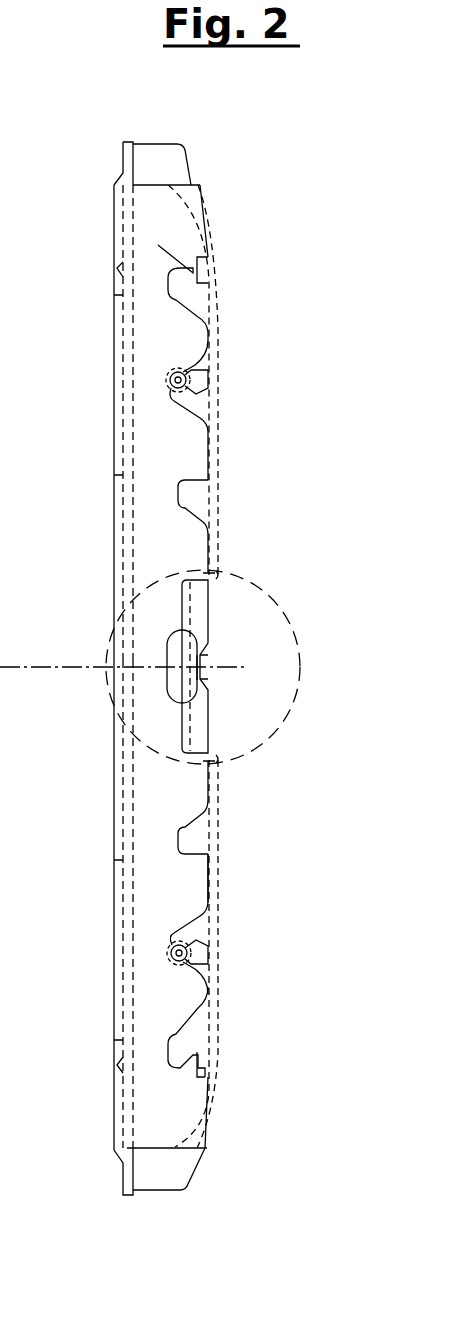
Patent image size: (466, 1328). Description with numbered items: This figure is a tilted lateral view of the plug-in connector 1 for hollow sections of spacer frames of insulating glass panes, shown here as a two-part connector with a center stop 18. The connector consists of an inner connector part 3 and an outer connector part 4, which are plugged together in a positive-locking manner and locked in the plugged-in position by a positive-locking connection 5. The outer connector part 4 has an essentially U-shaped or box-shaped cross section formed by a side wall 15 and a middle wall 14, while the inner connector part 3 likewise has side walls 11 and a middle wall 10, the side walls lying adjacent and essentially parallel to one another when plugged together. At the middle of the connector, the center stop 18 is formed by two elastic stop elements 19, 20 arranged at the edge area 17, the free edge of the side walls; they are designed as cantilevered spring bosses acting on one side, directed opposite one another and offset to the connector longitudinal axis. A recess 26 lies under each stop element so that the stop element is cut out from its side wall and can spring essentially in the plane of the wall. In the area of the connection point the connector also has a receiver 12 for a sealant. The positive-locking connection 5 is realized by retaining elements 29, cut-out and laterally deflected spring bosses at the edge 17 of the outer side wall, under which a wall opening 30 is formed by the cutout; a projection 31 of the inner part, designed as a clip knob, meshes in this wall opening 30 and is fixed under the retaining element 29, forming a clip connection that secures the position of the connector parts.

The plug-in connector 1 is at (102, 149).
The inner connector part 3 is at (213, 310).
The outer connector part 4 is at (165, 232).
The positive-locking connection 5 is at (154, 371).
The middle wall of the inner part 10 is at (135, 888).
The side walls of the inner part 11 is at (188, 295).
The receiver 12 is at (178, 718).
The middle wall 14 is at (113, 447).
The side wall 15 is at (155, 500).
The edge area 17 is at (210, 872).
The center stop 18 is at (175, 644).
The stop element 19 is at (203, 652).
The stop element 20 is at (206, 668).
The recess 26 is at (172, 675).
The retaining elements 29 is at (158, 245).
The wall opening 30 is at (193, 400).
The projection 31 is at (170, 380).